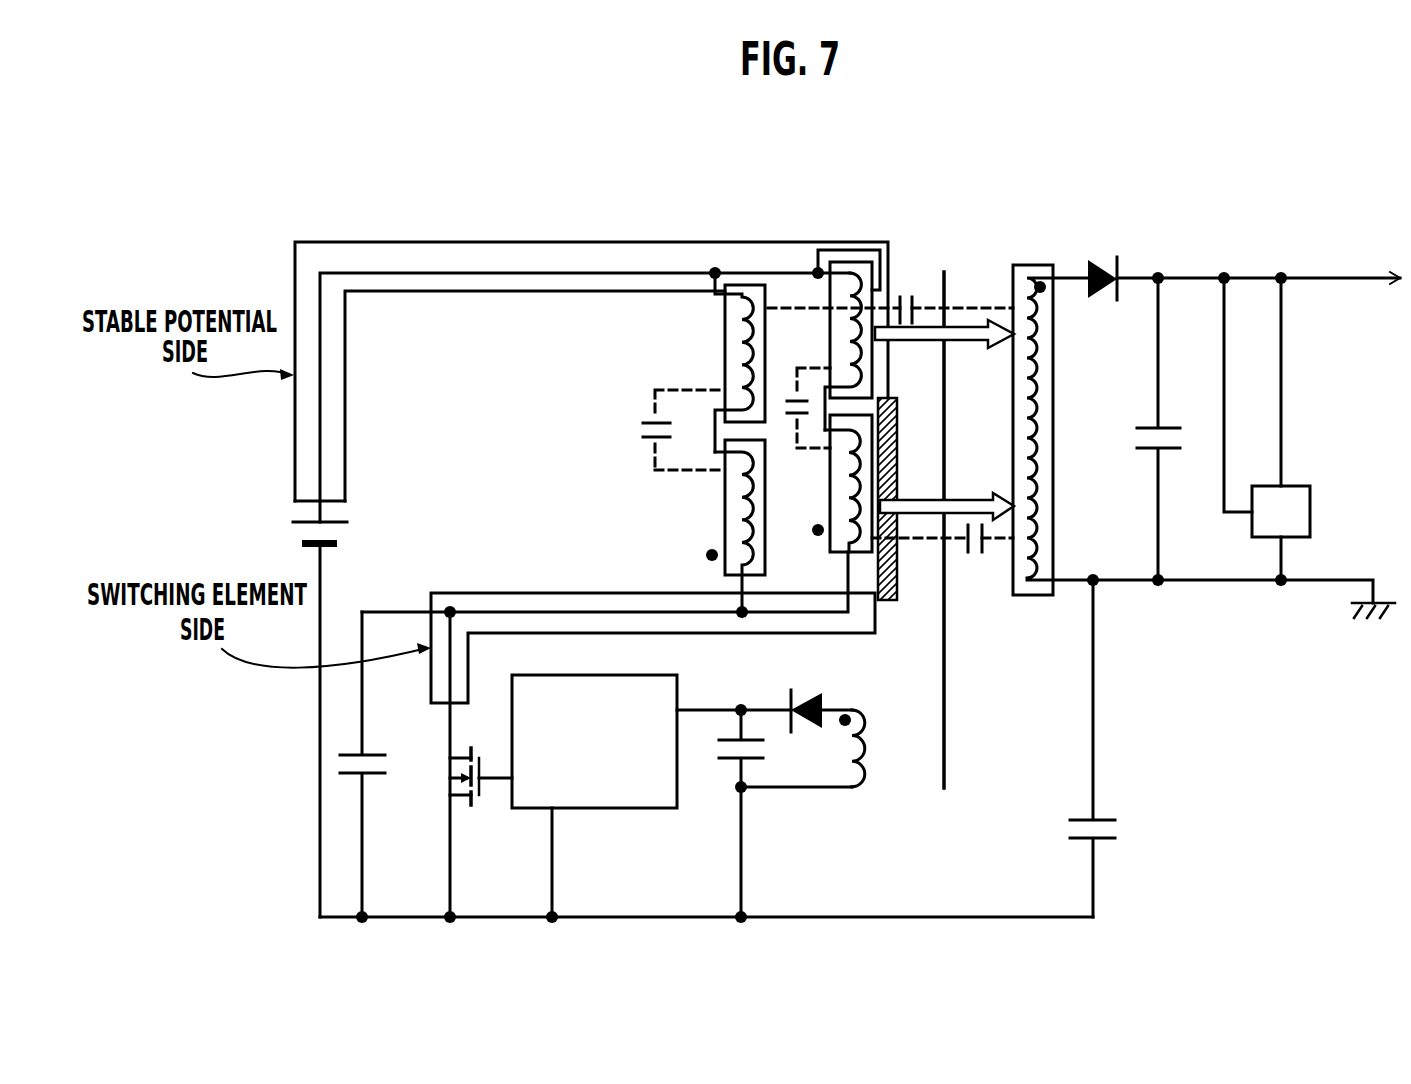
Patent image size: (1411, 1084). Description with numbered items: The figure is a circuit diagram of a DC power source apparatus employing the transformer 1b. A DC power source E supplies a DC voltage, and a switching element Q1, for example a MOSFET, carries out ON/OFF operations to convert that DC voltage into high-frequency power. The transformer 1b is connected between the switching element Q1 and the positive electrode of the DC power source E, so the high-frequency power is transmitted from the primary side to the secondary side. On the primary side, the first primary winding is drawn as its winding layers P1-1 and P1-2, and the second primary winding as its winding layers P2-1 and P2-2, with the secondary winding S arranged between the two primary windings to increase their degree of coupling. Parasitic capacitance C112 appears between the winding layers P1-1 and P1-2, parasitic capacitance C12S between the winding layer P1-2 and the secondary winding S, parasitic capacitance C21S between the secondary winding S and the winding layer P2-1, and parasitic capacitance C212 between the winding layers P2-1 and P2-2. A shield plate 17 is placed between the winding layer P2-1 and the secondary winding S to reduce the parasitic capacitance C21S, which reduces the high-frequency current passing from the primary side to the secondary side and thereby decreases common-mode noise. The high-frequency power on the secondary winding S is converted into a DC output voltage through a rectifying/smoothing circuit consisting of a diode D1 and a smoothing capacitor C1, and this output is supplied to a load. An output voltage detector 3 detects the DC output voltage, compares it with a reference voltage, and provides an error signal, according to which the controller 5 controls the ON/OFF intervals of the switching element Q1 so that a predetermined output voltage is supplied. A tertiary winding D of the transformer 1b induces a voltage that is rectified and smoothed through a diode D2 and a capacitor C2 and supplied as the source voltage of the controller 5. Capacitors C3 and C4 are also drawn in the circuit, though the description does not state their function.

The transformer 1b is at (956, 264).
The shield plate 17 is at (886, 603).
The output voltage detector 3 is at (1297, 486).
The controller 5 is at (627, 808).
The DC power source E is at (330, 719).
The switching element Q1 is at (481, 798).
The smoothing capacitor C1 is at (1176, 429).
The capacitor C2 is at (752, 760).
The capacitor C3 is at (377, 764).
The capacitor C4 is at (1109, 748).
The diode D1 is at (1244, 260).
The diode D2 is at (821, 693).
The tertiary winding D is at (846, 748).
The secondary winding S is at (1193, 434).
The winding layer P1-1 is at (728, 529).
The winding layer P1-2 is at (728, 362).
The winding layer P2-1 is at (833, 483).
The winding layer P2-2 is at (833, 346).
The parasitic capacitance C112 is at (655, 430).
The parasitic capacitance C212 is at (783, 398).
The parasitic capacitance C12S is at (912, 296).
The parasitic capacitance C21S is at (983, 554).